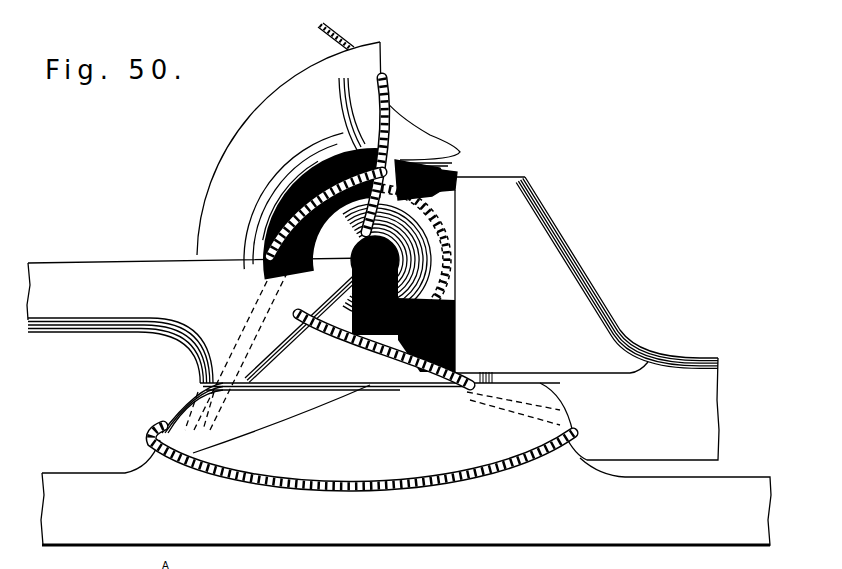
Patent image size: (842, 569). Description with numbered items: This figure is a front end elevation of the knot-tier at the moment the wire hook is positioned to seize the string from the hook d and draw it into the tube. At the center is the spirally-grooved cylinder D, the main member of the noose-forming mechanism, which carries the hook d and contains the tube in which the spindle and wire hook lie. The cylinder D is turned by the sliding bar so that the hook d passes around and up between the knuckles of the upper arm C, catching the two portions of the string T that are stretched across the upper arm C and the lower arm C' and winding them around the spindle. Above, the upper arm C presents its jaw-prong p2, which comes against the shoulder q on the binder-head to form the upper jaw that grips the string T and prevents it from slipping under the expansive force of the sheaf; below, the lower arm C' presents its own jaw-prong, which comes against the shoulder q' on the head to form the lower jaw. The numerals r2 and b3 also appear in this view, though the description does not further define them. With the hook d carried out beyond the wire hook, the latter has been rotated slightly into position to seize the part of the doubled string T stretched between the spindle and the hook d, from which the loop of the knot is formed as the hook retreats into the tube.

The upper arm C is at (198, 320).
The lower arm C' is at (587, 409).
The spirally-grooved cylinder D is at (326, 207).
The hook d is at (389, 94).
The string T is at (362, 434).
The shoulder q is at (209, 412).
The shoulder q' is at (415, 379).
The jaw-prong p2 is at (253, 326).
The cord end r2 is at (519, 400).
The base b3 is at (406, 492).